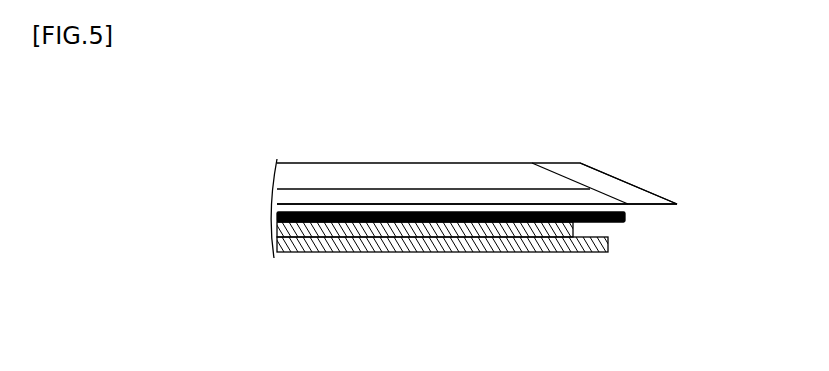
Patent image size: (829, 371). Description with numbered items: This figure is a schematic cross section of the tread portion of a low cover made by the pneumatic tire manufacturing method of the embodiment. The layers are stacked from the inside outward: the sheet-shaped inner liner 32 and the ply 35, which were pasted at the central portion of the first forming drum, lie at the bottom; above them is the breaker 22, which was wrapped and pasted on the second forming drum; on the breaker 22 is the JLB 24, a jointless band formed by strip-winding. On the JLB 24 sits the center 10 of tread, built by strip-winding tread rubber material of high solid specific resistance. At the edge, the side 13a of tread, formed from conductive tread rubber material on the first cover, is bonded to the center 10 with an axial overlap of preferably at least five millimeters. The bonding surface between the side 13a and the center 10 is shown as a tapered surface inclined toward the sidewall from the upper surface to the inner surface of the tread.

The center of tread 10 is at (407, 172).
The side of tread 13a is at (602, 177).
The JLB (jointless band) 24 is at (282, 197).
The breaker 22 is at (618, 223).
The ply 35 is at (507, 232).
The inner liner 32 is at (430, 245).